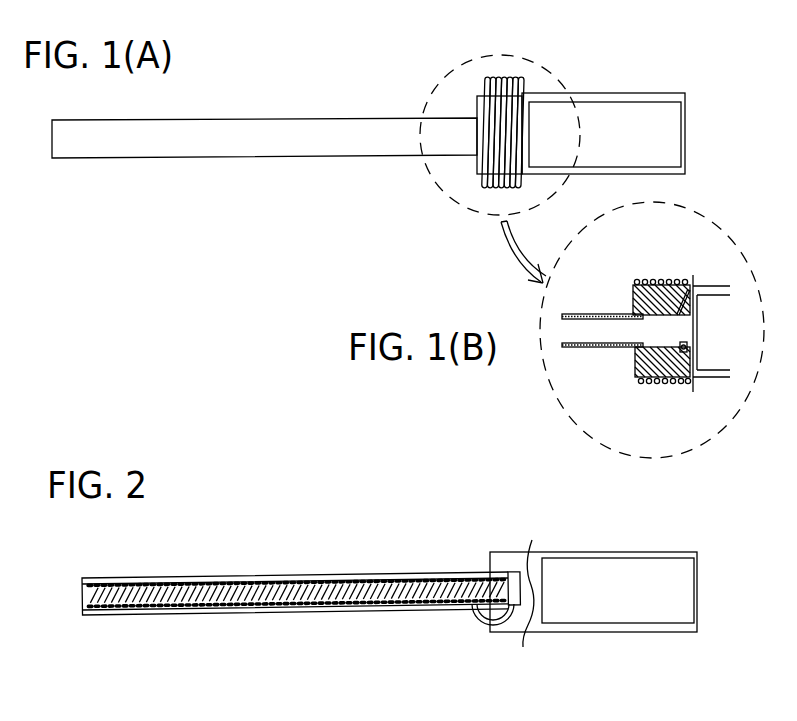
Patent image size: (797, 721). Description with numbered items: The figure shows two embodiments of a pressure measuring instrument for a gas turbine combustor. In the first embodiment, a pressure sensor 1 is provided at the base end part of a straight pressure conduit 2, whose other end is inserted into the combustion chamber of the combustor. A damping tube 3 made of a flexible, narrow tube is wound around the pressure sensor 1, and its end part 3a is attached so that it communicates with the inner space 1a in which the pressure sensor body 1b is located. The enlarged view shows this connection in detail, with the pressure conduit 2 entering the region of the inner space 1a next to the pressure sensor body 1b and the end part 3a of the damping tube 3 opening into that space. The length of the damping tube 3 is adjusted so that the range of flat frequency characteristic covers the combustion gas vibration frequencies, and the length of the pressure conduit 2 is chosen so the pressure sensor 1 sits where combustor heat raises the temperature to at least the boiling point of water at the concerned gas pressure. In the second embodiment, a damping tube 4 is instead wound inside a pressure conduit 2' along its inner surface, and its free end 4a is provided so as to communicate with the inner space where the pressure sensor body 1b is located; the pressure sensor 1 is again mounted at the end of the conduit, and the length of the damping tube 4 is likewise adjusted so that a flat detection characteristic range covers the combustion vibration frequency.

In FIG. 1A, the pressure sensor 1 is at (610, 118).
In FIG. 2, the pressure sensor 1 is at (627, 583).
In FIG. 1B, the inner space 1a is at (637, 367).
In FIG. 1B, the pressure sensor body 1b is at (662, 382).
In FIG. 1A, the pressure conduit 2 is at (264, 162).
In FIG. 1B, the pressure conduit 2 is at (602, 355).
In FIG. 2, the pressure conduit 2' is at (301, 621).
In FIG. 1A, the damping tube 3 is at (507, 70).
In FIG. 1B, the damping tube 3 is at (653, 280).
In FIG. 1B, the end part of damping tube 3a is at (693, 288).
In FIG. 2, the damping tube 4 is at (348, 577).
In FIG. 2, the free end of damping tube 4a is at (477, 625).